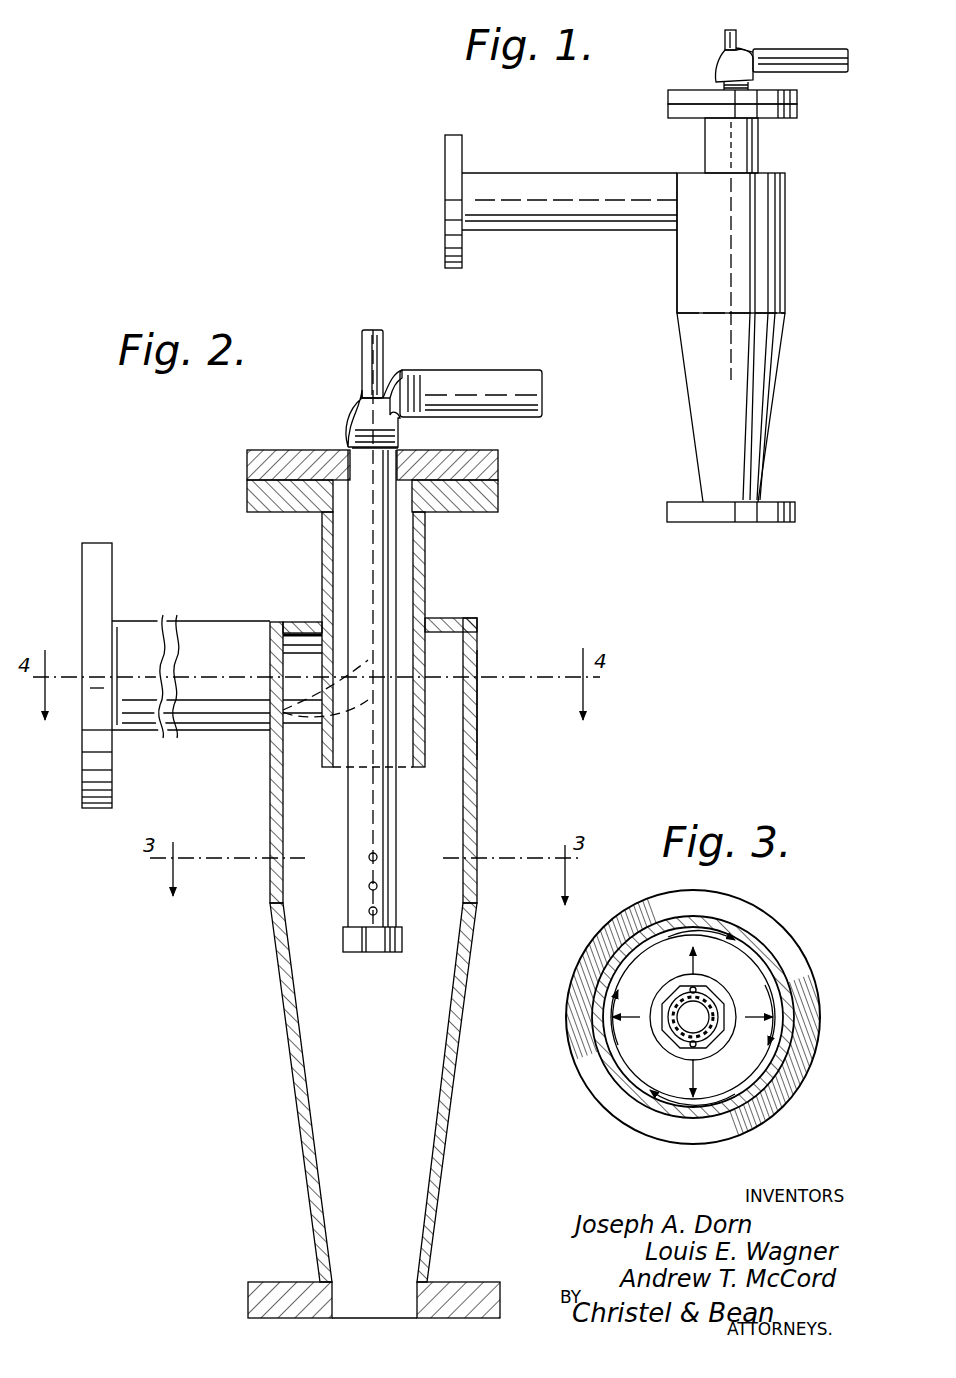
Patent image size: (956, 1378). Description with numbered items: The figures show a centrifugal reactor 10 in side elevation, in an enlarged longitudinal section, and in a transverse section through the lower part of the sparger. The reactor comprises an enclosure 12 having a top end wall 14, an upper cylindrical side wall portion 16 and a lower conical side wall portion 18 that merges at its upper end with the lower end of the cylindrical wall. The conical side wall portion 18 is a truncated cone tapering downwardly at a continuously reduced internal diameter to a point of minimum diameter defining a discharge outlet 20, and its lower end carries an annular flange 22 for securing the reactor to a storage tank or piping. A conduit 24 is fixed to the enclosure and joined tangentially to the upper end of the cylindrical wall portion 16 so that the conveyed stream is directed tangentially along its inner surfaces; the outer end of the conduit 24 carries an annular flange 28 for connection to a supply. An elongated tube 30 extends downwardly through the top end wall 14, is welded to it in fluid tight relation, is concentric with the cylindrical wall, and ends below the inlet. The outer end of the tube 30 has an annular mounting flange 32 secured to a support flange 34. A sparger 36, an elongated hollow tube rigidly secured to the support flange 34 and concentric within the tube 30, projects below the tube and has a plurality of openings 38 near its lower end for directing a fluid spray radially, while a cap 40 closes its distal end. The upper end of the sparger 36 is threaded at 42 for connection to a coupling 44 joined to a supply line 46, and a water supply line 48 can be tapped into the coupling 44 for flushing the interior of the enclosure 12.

In FIG. 1, the centrifugal reactor 10 is at (825, 314).
In FIG. 2, the centrifugal reactor 10 is at (530, 612).
In FIG. 1, the enclosure 12 is at (663, 307).
In FIG. 2, the enclosure 12 is at (480, 705).
In FIG. 3, the enclosure 12 is at (628, 1105).
In FIG. 2, the top end wall 14 is at (452, 615).
In FIG. 1, the upper cylindrical side wall portion 16 is at (758, 255).
In FIG. 2, the upper cylindrical side wall portion 16 is at (270, 812).
In FIG. 3, the upper cylindrical side wall portion 16 is at (612, 953).
In FIG. 1, the lower conical side wall portion 18 is at (750, 400).
In FIG. 2, the lower conical side wall portion 18 is at (305, 1130).
In FIG. 2, the discharge outlet 20 is at (375, 1305).
In FIG. 3, the discharge outlet 20 is at (710, 1048).
In FIG. 1, the annular flange 22 is at (768, 522).
In FIG. 2, the annular flange 22 is at (262, 1280).
In FIG. 3, the annular flange 22 is at (775, 928).
In FIG. 1, the conduit 24 is at (565, 222).
In FIG. 2, the conduit 24 is at (192, 618).
In FIG. 1, the annular flange 28 is at (452, 152).
In FIG. 2, the annular flange 28 is at (90, 553).
In FIG. 1, the elongated tube 30 is at (758, 140).
In FIG. 2, the elongated tube 30 is at (427, 566).
In FIG. 1, the annular mounting flange 32 is at (797, 110).
In FIG. 2, the annular mounting flange 32 is at (252, 497).
In FIG. 1, the support flange 34 is at (797, 97).
In FIG. 2, the support flange 34 is at (252, 462).
In FIG. 2, the sparger 36 is at (392, 835).
In FIG. 3, the sparger 36 is at (713, 1050).
In FIG. 2, the openings 38 is at (369, 911).
In FIG. 3, the openings 38 is at (693, 1044).
In FIG. 2, the cap 40 is at (375, 952).
In FIG. 3, the cap 40 is at (723, 1005).
In FIG. 1, the threaded upper end 42 is at (718, 72).
In FIG. 2, the threaded upper end 42 is at (368, 428).
In FIG. 1, the coupling 44 is at (722, 55).
In FIG. 2, the coupling 44 is at (402, 375).
In FIG. 1, the supply line 46 is at (805, 55).
In FIG. 2, the supply line 46 is at (512, 380).
In FIG. 1, the water supply line 48 is at (740, 46).
In FIG. 2, the water supply line 48 is at (368, 338).